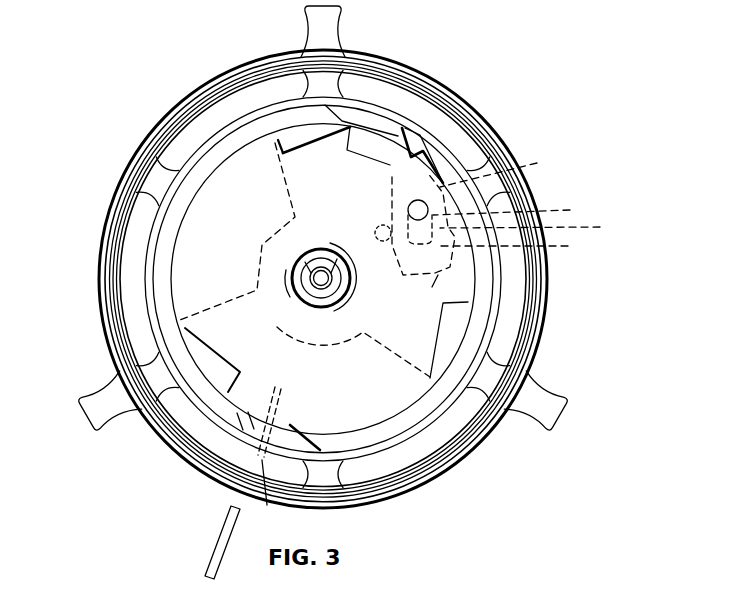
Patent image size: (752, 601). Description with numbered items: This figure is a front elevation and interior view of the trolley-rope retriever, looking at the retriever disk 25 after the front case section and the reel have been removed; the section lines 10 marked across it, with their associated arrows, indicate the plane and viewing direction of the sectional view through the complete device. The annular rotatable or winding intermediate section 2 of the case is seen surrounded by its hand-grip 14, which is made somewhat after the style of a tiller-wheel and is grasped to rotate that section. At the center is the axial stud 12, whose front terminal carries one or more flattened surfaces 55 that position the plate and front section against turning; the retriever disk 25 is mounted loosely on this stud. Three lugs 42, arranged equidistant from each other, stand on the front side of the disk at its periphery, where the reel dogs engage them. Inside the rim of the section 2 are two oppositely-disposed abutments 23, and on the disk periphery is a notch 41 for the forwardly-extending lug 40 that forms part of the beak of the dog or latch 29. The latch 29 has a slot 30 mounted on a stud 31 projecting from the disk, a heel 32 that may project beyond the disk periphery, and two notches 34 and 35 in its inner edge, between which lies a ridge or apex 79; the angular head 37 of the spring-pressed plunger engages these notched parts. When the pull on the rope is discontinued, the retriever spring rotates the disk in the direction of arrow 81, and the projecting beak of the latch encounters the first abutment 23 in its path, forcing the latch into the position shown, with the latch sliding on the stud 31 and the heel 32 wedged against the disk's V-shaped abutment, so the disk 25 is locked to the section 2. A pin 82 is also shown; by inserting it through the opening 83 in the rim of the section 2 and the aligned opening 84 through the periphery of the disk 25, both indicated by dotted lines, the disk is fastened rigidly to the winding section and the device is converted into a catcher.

The rotatable or winding intermediate section 2 is at (173, 270).
The section lines 10— 10 is at (498, 95).
The axial stud 12 is at (319, 280).
The hand-grip 14 is at (543, 272).
The abutments 23 is at (373, 120).
The retriever disk 25 is at (305, 260).
The dog or latch 29 is at (397, 165).
The slot 30 is at (423, 223).
The stud 31 is at (418, 202).
The heel 32 is at (423, 293).
The notch 34 is at (519, 246).
The notch 35 is at (516, 210).
The angular head 37 is at (502, 168).
The forwardly-extending lug 40 is at (397, 140).
The notch 41 is at (350, 153).
The lugs 42 is at (280, 140).
The flattened surfaces 55 is at (293, 254).
The ridge or apex 79 is at (535, 227).
The arrow 81 is at (115, 126).
The pin 82 is at (218, 545).
The opening 83 is at (276, 496).
The opening 84 is at (281, 391).